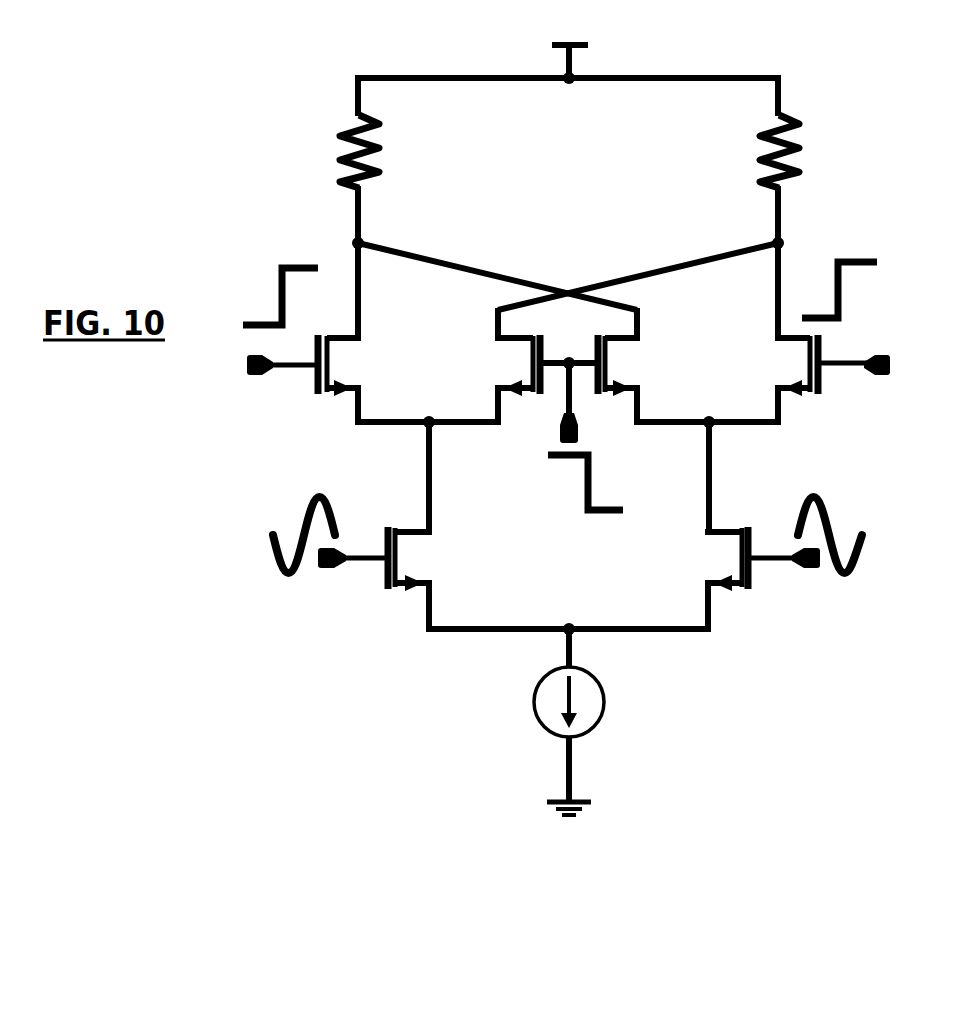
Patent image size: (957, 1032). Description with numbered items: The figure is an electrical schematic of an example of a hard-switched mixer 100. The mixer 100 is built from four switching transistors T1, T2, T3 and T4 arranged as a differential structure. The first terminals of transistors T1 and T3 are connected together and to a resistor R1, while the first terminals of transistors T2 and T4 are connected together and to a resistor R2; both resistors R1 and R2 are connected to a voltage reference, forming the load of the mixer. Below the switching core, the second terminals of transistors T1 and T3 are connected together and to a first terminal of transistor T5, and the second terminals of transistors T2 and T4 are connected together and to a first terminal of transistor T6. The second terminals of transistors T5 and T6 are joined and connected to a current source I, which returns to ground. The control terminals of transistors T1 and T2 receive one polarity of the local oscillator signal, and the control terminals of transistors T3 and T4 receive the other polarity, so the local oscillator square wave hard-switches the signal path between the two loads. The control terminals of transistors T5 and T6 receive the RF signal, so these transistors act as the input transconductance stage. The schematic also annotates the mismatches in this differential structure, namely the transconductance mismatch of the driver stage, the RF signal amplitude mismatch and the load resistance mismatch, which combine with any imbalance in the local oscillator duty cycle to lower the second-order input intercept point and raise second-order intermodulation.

The hard-switched mixer 100 is at (226, 111).
The resistor R1 is at (396, 151).
The resistor R2 is at (734, 151).
The transistor T1 is at (311, 414).
The transistor T2 is at (852, 404).
The transistor T3 is at (482, 347).
The transistor T4 is at (644, 360).
The transistor T5 is at (362, 490).
The transistor T6 is at (793, 491).
The current source I is at (584, 702).